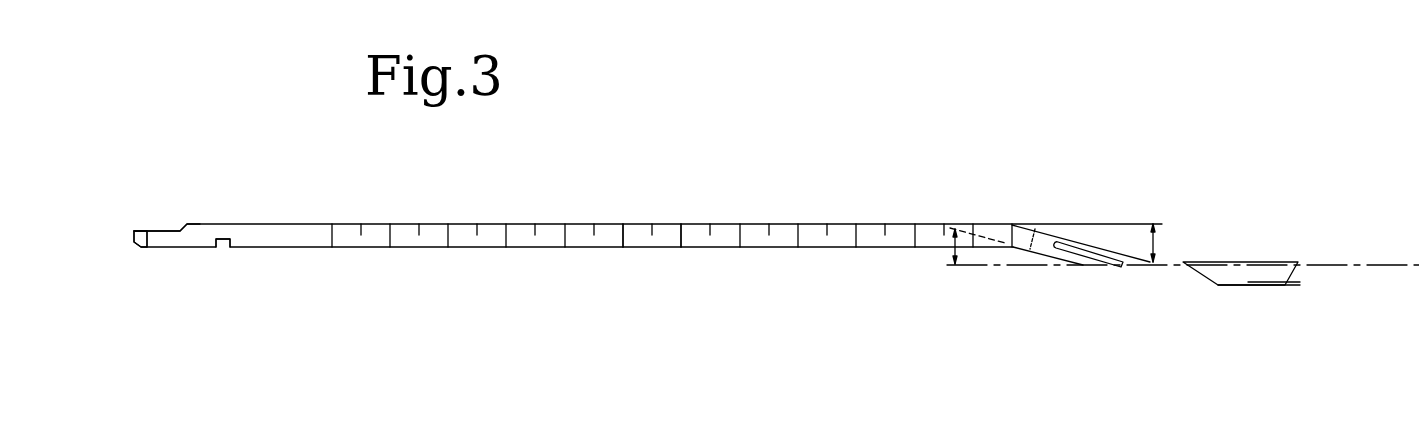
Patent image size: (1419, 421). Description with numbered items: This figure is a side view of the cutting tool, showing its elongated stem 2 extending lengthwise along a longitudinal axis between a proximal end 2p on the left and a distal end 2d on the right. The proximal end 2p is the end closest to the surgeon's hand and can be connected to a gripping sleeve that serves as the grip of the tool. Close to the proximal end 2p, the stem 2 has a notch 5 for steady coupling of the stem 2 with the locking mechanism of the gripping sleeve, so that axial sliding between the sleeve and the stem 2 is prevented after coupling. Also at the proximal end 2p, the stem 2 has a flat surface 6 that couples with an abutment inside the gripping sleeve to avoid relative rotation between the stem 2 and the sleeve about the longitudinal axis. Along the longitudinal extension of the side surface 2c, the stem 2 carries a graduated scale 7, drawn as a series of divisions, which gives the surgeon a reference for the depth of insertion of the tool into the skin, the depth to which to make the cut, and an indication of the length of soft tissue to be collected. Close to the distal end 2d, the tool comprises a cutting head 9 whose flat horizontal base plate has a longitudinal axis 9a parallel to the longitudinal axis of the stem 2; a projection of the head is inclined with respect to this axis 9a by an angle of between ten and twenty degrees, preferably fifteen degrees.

The stem 2 is at (725, 247).
The side surface 2c is at (636, 229).
The distal end 2d is at (1097, 247).
The proximal end 2p is at (143, 243).
The notch 5 is at (223, 248).
The flat surface 6 is at (156, 230).
The graduated scale 7 is at (506, 224).
The cutting head 9 is at (1274, 262).
The longitudinal axis of the cutting head 9a is at (1337, 265).